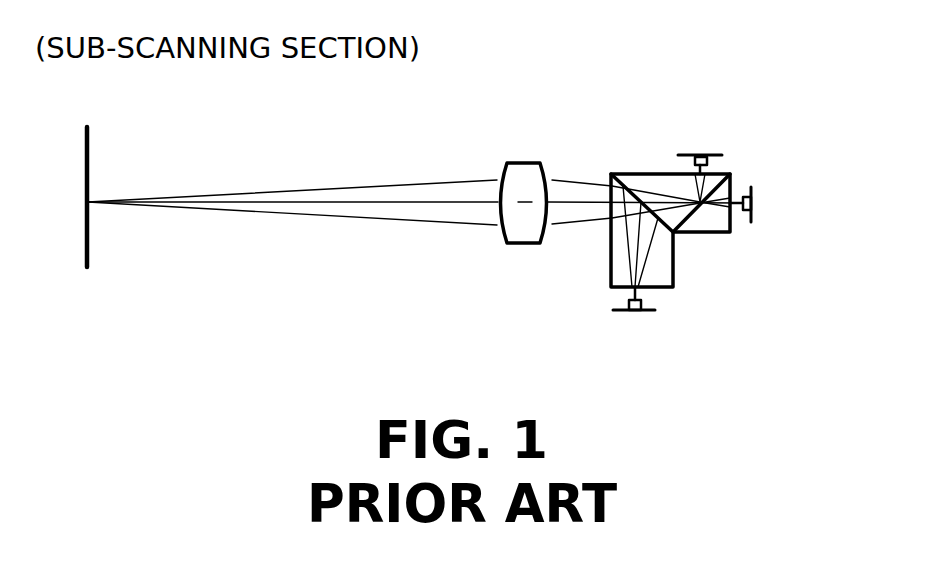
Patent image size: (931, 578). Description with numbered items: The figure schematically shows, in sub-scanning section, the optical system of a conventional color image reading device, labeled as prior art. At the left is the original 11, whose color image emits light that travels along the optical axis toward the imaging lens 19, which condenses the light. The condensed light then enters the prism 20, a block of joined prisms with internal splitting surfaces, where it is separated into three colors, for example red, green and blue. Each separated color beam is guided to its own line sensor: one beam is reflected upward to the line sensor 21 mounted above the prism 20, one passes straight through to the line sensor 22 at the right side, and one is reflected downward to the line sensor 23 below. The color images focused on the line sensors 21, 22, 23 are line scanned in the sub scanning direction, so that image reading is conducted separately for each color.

The original 11 is at (90, 157).
The imaging lens 19 is at (518, 176).
The prism 20 is at (665, 260).
The line sensor 21 is at (712, 156).
The line sensor 22 is at (755, 196).
The line sensor 23 is at (640, 312).